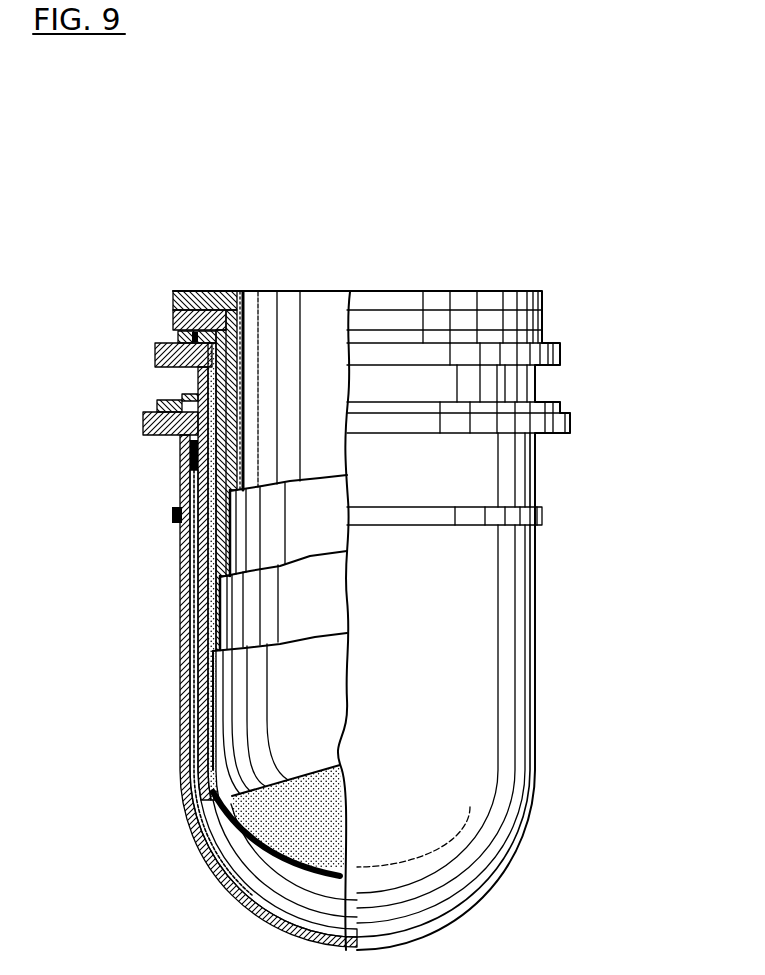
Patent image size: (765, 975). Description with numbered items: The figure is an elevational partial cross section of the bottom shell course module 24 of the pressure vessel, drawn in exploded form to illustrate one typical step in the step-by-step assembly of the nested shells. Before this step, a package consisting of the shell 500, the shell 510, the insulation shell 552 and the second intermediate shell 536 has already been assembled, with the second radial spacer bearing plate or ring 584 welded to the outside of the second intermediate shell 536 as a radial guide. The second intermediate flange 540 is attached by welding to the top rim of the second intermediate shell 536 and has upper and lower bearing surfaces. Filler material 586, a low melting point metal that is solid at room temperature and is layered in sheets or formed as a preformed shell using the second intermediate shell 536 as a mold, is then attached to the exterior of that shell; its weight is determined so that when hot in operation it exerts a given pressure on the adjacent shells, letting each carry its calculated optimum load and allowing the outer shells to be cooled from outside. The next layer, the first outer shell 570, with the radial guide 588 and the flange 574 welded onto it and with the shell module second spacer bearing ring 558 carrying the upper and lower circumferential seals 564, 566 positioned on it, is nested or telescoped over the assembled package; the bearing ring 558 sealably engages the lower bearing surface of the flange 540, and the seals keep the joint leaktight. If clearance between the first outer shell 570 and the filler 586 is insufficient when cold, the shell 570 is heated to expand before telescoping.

The bottom shell course module 24 is at (593, 529).
The shell 500 is at (345, 422).
The shell 510 is at (338, 526).
The second intermediate shell 536 is at (190, 686).
The second intermediate flange 540 is at (173, 347).
The insulation shell 552 is at (340, 612).
The shell module second spacer bearing ring 558 is at (157, 407).
The upper circumferential seal 564 is at (181, 397).
The lower circumferential seal 566 is at (145, 427).
The first outer shell 570 is at (182, 559).
The flange 574 is at (172, 437).
The second radial spacer bearing plate or ring 584 is at (196, 458).
The filler material 586 is at (188, 607).
The radial guide 588 is at (172, 517).